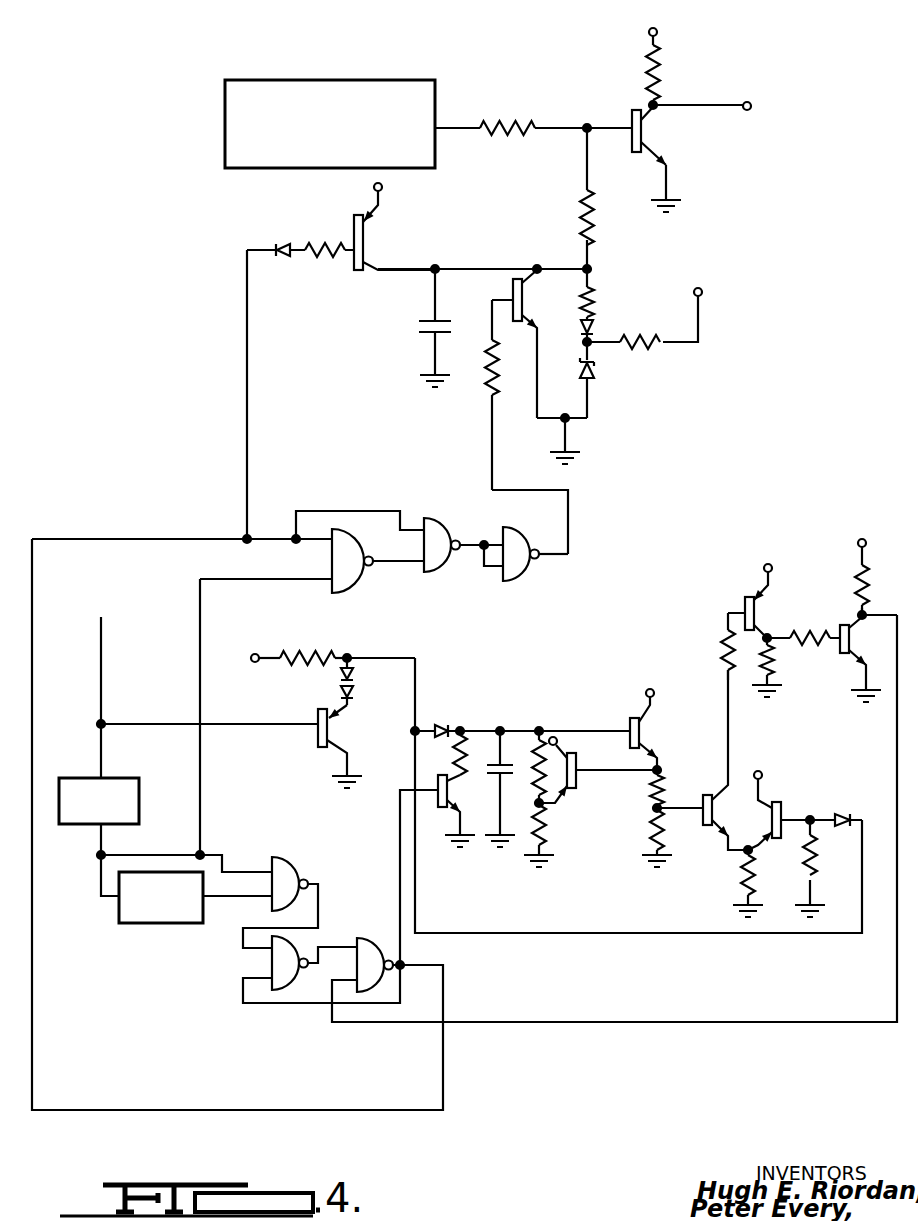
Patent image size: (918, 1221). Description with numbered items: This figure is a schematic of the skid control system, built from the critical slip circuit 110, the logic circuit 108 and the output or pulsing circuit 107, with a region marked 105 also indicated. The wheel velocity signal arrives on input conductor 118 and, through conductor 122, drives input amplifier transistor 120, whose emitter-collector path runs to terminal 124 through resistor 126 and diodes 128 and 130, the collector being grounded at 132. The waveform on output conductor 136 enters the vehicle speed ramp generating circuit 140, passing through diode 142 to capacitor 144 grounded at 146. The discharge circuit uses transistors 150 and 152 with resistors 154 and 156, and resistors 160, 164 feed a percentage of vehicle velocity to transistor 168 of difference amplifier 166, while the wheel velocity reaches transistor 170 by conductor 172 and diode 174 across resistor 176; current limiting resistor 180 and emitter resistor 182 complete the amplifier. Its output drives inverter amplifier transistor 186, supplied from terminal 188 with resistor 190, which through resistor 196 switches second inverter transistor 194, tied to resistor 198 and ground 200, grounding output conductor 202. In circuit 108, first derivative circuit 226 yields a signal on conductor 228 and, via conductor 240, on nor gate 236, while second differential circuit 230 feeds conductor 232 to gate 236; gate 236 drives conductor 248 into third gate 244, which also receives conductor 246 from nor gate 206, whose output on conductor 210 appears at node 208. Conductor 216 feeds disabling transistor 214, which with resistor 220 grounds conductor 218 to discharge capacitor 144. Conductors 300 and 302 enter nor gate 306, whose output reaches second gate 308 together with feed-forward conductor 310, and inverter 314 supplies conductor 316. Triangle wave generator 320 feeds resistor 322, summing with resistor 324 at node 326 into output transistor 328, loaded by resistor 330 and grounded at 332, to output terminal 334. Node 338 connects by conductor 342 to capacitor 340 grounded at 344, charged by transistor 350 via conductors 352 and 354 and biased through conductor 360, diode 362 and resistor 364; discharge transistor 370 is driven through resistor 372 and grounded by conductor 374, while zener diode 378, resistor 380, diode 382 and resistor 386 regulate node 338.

The triangle wave generator system 320 is at (436, 80).
The resistor 322 is at (515, 125).
The node 326 is at (585, 132).
The output transistor 328 is at (645, 130).
The resistor 330 is at (660, 70).
The output terminal 334 is at (751, 102).
The ground 332 is at (672, 190).
The second resistor 324 is at (592, 235).
The conductor 352 is at (376, 212).
The resistor 364 is at (337, 213).
The diode 362 is at (278, 244).
The conductor 360 is at (245, 370).
The transistor 350 is at (358, 272).
The output circuit 107 is at (334, 361).
The conductor 342 is at (485, 266).
The conductor 354 is at (435, 244).
The capacitor 340 is at (418, 328).
The ground 344 is at (430, 360).
The discharge transistor 370 is at (511, 295).
The resistor 372 is at (489, 395).
The conductor 374 is at (533, 405).
The resistor 380 is at (593, 297).
The diode 382 is at (596, 328).
The resistor 386 is at (650, 347).
The zener diode 378 is at (598, 378).
The node 338 is at (600, 268).
The circuit section 105 is at (750, 484).
The conductor 300 is at (62, 539).
The conductor 302 is at (205, 579).
The conductor 310 is at (370, 511).
The nor gate 306 is at (355, 590).
The second gate 308 is at (450, 570).
The inverter circuit 314 is at (530, 572).
The conductor 316 is at (570, 500).
The input conductor 118 is at (103, 640).
The conductor 122 is at (130, 720).
The first derivative circuit 226 is at (145, 756).
The conductor 240 is at (150, 855).
The output conductor 228 is at (95, 850).
The second differential circuit 230 is at (110, 925).
The output conductor 232 is at (230, 900).
The output nor gate 236 is at (308, 838).
The third gate 244 is at (302, 940).
The conductor 248 is at (270, 948).
The conductor 246 is at (265, 1005).
The nor gate 206 is at (372, 985).
The output node 208 is at (404, 967).
The conductor 210 is at (398, 970).
The conductor 216 is at (420, 963).
The disabling transistor 214 is at (398, 800).
The output conductor 202 is at (585, 1022).
The logic circuit 108 is at (262, 821).
The terminal 124 is at (252, 664).
The resistor 126 is at (318, 632).
The upper diode 128 is at (350, 655).
The diode 130 is at (375, 702).
The ground 132 is at (340, 725).
The input amplifier transistor 120 is at (318, 730).
The resistor 220 is at (377, 762).
The output conductor 136 is at (418, 670).
The vehicle speed ramp generating circuit 140 is at (439, 888).
The diode 142 is at (445, 722).
The conductor 218 is at (482, 728).
The capacitor 144 is at (481, 777).
The ground 146 is at (508, 820).
The resistor 154 is at (535, 745).
The resistor 156 is at (548, 840).
The transistor 152 is at (578, 778).
The critical slip circuit 110 is at (622, 831).
The transistor 150 is at (642, 730).
The resistor 160 is at (662, 790).
The resistor 164 is at (652, 850).
The difference amplifier system 166 is at (660, 868).
The conductor 172 is at (625, 933).
The transistor 168 is at (729, 862).
The resistor 182 is at (740, 875).
The transistor 170 is at (802, 793).
The resistor 176 is at (805, 865).
The diode 174 is at (861, 787).
The current limiting resistor 180 is at (724, 645).
The inverter amplifier transistor 186 is at (758, 608).
The terminal 188 is at (764, 568).
The resistor 190 is at (775, 672).
The resistor 196 is at (805, 645).
The second inverter transistor 194 is at (860, 680).
The ground 200 is at (875, 675).
The resistor 198 is at (858, 585).